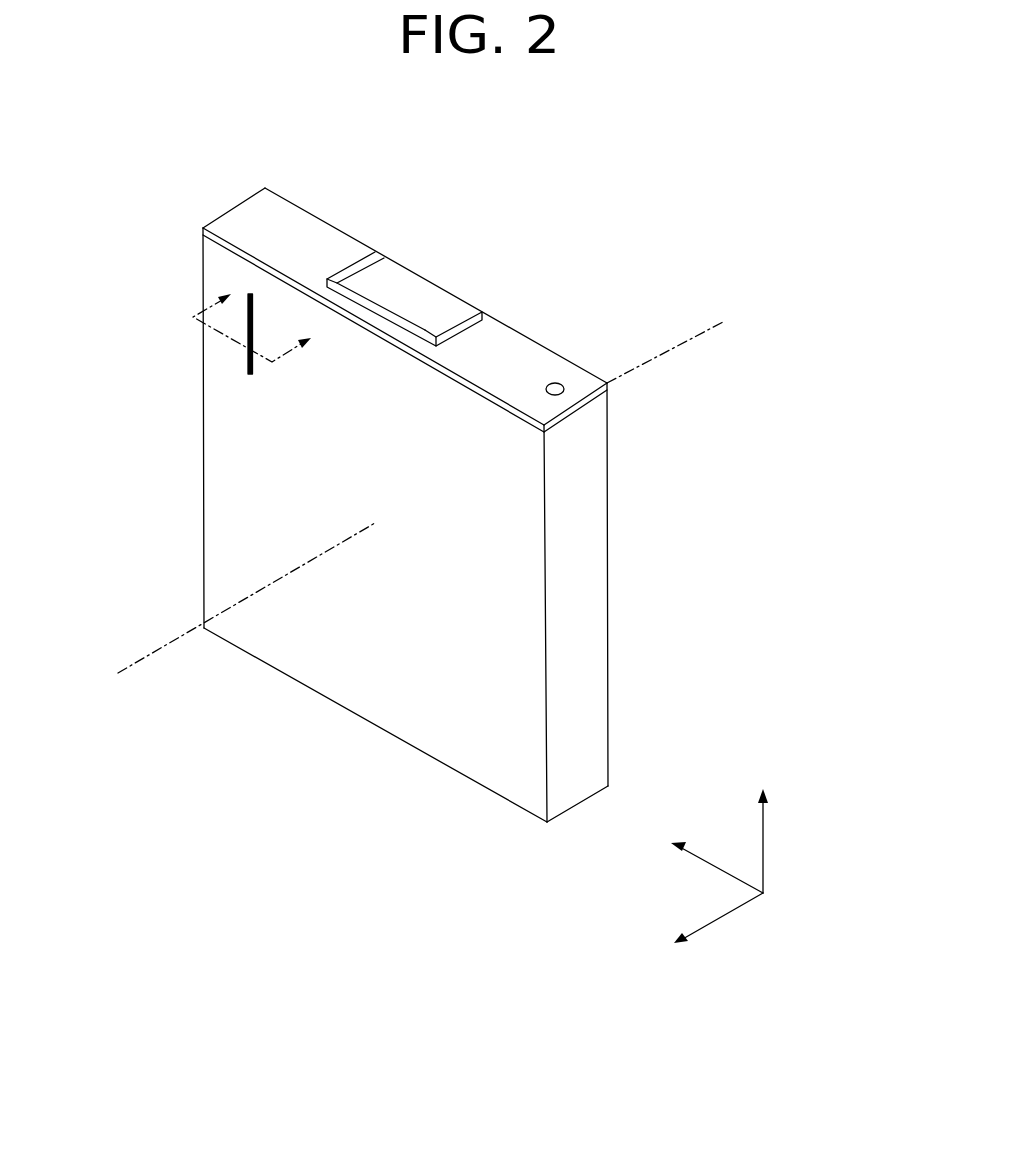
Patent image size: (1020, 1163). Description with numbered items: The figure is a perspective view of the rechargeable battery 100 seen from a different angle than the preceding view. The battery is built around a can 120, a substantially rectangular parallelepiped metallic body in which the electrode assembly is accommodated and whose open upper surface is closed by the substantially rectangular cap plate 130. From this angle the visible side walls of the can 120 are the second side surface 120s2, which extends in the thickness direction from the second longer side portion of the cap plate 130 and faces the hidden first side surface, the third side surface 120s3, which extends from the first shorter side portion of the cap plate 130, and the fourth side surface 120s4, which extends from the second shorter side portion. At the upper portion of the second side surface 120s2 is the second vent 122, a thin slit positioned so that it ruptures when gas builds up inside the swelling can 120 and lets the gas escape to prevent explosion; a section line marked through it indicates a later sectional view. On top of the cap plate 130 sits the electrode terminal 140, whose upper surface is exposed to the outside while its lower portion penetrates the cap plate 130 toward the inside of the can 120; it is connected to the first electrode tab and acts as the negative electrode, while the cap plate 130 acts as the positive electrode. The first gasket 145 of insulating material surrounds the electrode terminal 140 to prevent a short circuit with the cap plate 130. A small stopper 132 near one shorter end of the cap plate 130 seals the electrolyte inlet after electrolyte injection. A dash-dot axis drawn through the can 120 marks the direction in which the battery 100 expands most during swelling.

The rechargeable battery 100 is at (612, 246).
The can 120 is at (468, 786).
The second side surface 120s2 is at (400, 717).
The third side surface 120s3 is at (597, 608).
The fourth side surface 120s4 is at (203, 518).
The second vent 122 is at (248, 362).
The cap plate 130 is at (513, 350).
The stopper 132 is at (560, 384).
The electrode terminal 140 is at (398, 277).
The first gasket 145 is at (365, 262).